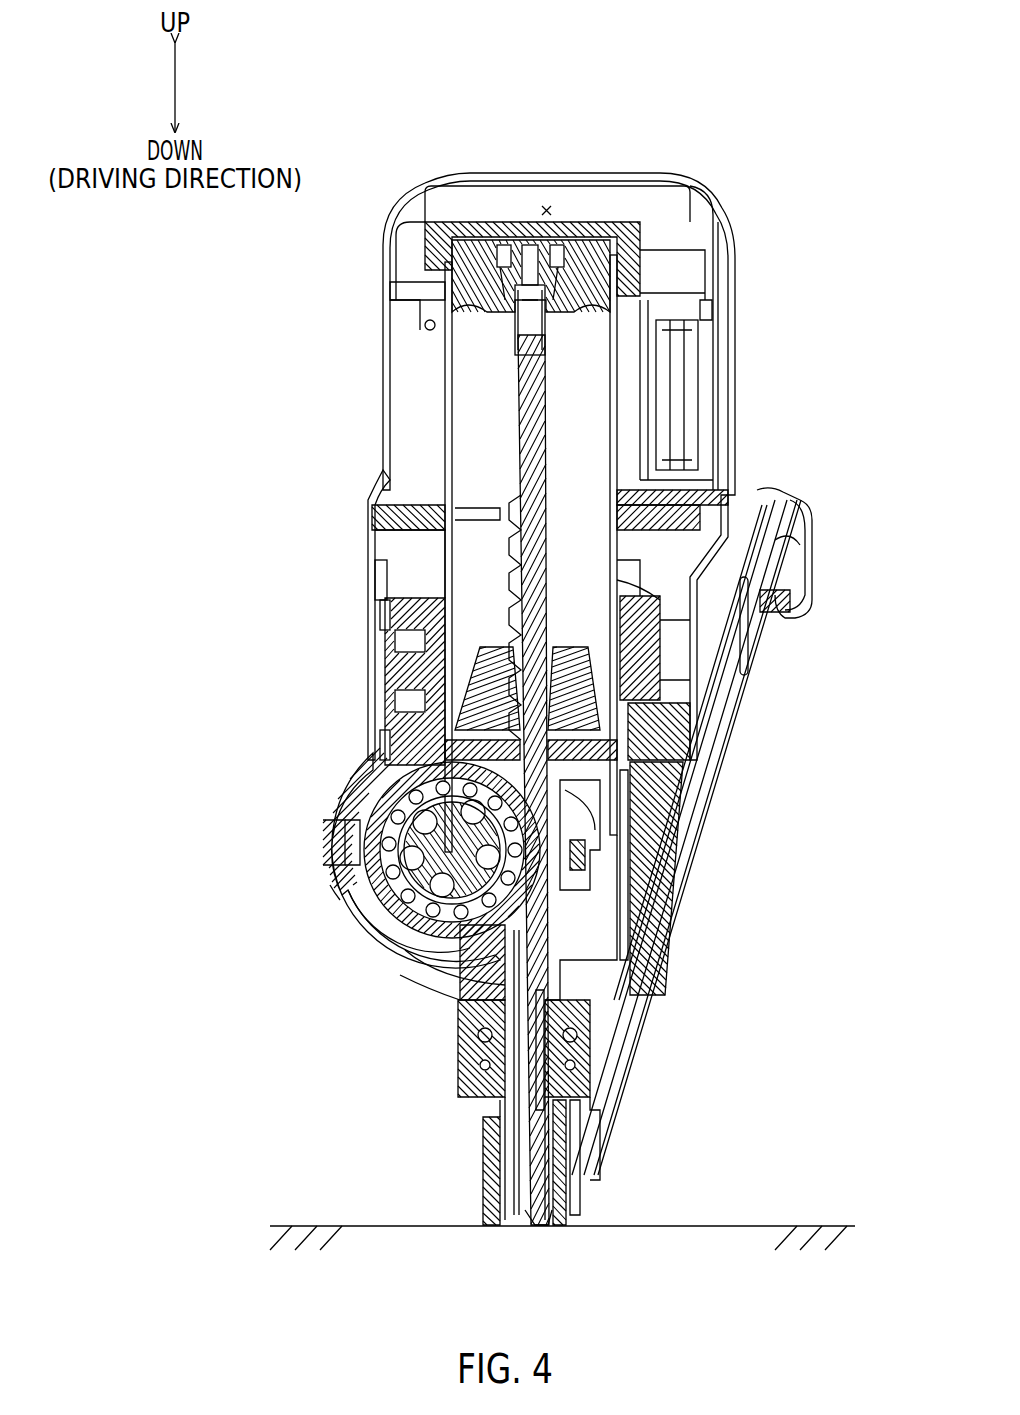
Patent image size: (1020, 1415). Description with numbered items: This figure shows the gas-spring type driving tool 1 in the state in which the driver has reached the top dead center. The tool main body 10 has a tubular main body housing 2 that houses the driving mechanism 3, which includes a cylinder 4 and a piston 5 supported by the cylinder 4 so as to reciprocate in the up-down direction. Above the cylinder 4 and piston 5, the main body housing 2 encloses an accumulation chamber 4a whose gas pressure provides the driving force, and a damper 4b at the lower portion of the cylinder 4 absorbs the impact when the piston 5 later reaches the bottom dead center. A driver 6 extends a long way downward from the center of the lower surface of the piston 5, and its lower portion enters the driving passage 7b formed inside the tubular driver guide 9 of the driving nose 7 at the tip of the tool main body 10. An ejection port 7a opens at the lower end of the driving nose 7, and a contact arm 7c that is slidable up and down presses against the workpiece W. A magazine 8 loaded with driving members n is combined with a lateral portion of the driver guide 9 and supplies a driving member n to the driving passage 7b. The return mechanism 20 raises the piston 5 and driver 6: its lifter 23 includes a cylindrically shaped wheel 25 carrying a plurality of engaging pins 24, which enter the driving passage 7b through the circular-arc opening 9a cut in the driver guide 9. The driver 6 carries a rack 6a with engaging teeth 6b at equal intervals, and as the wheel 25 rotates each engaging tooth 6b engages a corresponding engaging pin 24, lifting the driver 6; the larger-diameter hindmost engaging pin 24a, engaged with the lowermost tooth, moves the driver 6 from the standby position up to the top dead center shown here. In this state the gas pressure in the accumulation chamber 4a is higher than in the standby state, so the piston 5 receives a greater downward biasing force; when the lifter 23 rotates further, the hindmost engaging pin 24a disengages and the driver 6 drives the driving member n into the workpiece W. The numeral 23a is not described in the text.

The driving tool 1 is at (803, 52).
The tool main body 10 is at (776, 128).
The main body housing 2 is at (740, 287).
The driving mechanism 3 is at (770, 345).
The cylinder 4 is at (620, 414).
The accumulation chamber 4a is at (546, 208).
The damper 4b is at (590, 667).
The piston 5 is at (476, 257).
The driver 6 is at (557, 490).
The rack 6a is at (505, 505).
The engaging teeth 6b is at (505, 555).
The driving nose 7 is at (633, 1155).
The ejection port 7a is at (538, 1228).
The driving passage 7b is at (542, 1077).
The contact arm 7c is at (562, 1195).
The magazine 8 is at (717, 802).
The driver guide 9 is at (633, 917).
The opening 9a is at (425, 940).
The return mechanism 20 is at (300, 850).
The lifter 23 is at (373, 928).
The housing rim 23a is at (335, 910).
The engaging pins 24 is at (447, 940).
The hindmost engaging pin 24a is at (377, 760).
The wheel 25 is at (362, 838).
The driving member n is at (543, 997).
The workpiece W is at (332, 1226).